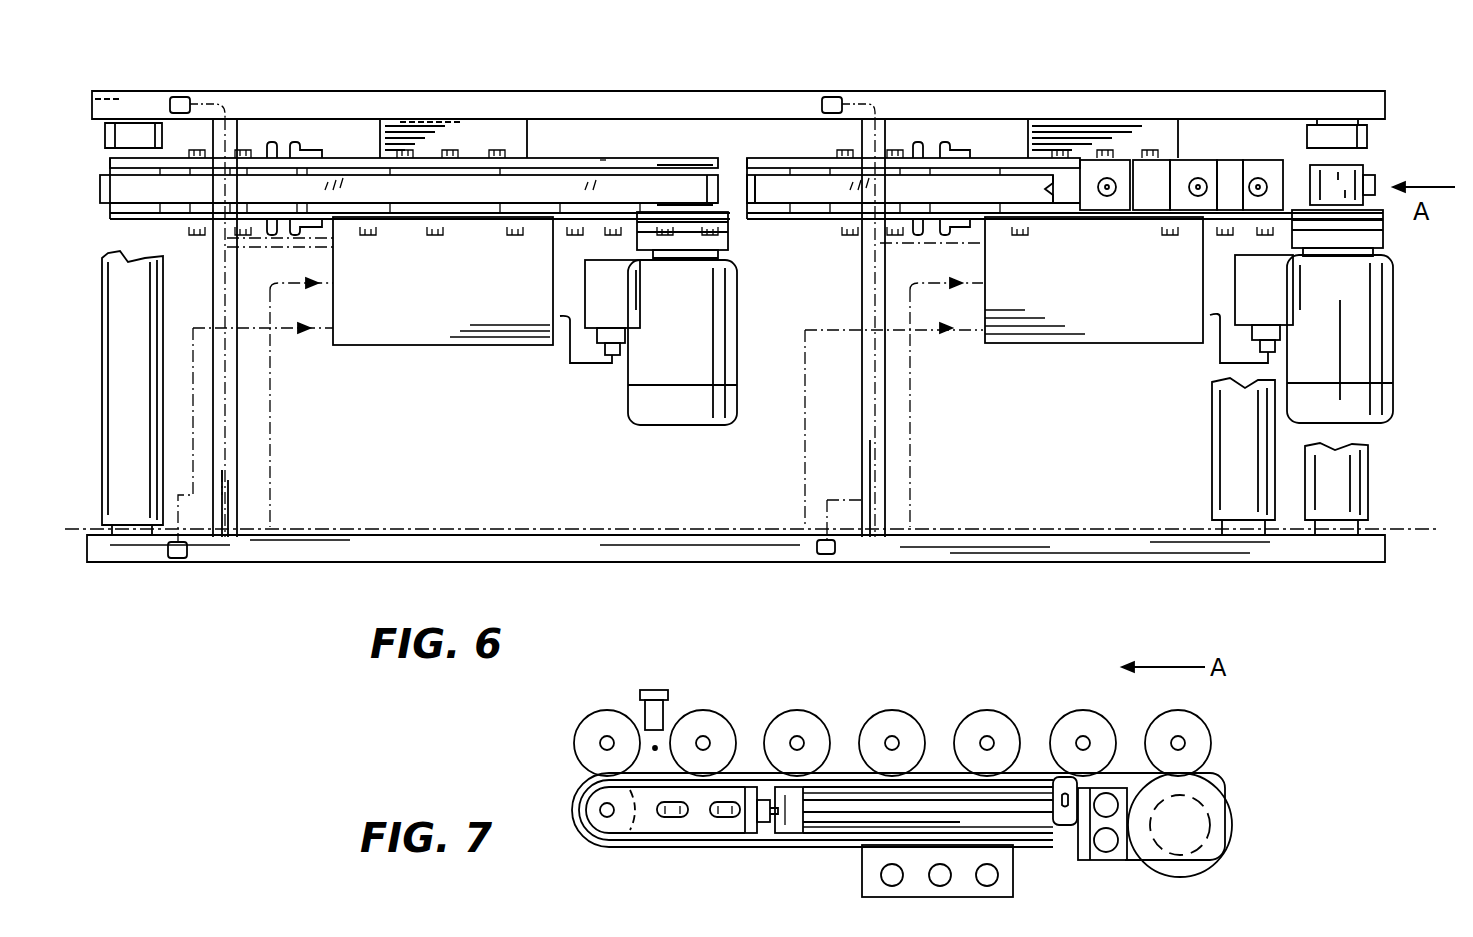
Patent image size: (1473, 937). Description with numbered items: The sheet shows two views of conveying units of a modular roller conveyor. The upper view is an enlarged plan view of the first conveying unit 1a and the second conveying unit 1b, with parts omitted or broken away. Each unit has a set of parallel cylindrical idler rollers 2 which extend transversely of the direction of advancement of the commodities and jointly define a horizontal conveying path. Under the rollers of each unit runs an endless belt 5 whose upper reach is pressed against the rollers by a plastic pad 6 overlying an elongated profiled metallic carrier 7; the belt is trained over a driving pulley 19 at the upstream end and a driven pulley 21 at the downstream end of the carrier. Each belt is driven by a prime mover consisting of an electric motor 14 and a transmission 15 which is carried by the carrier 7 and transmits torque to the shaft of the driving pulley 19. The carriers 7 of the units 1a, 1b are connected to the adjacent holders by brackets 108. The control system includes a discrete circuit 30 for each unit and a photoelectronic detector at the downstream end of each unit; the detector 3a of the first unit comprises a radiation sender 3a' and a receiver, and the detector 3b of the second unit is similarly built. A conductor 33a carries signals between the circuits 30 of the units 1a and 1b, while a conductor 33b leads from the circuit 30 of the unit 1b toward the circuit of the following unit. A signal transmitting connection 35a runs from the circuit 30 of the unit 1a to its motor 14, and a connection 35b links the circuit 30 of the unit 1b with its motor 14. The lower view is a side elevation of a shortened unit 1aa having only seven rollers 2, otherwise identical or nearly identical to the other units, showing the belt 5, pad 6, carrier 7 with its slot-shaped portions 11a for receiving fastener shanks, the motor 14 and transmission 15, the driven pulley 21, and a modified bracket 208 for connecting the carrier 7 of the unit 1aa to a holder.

In FIG. 6, the first conveying unit 1a is at (1300, 120).
In FIG. 6, the second conveying unit 1b is at (643, 140).
In FIG. 7, the shortened conveying unit 1aa is at (932, 715).
In FIG. 6, the idler roller 2 is at (125, 372).
In FIG. 7, the idler roller 2 is at (803, 718).
In FIG. 7, the photoelectronic detector 3a is at (678, 691).
In FIG. 6, the radiation source 3a' is at (828, 585).
In FIG. 6, the photoelectronic detector 3b is at (177, 558).
In FIG. 6, the endless belt 5 is at (357, 190).
In FIG. 7, the endless belt 5 is at (1020, 770).
In FIG. 6, the plastic pad 6 is at (605, 160).
In FIG. 7, the plastic pad 6 is at (745, 785).
In FIG. 6, the carrier 7 is at (548, 160).
In FIG. 7, the carrier 7 is at (818, 820).
In FIG. 7, the slot-shaped portion 11a is at (860, 815).
In FIG. 6, the electric motor 14 is at (685, 368).
In FIG. 7, the electric motor 14 is at (1218, 822).
In FIG. 6, the transmission 15 is at (735, 240).
In FIG. 7, the transmission 15 is at (1225, 860).
In FIG. 6, the driving pulley 19 is at (683, 168).
In FIG. 6, the driven pulley 21 is at (773, 160).
In FIG. 7, the driven pulley 21 is at (603, 835).
In FIG. 6, the circuit 30 is at (452, 300).
In FIG. 6, the conductor 33a is at (272, 448).
In FIG. 6, the conductor 33b is at (235, 415).
In FIG. 6, the signal transmitting connection 35a is at (1218, 340).
In FIG. 6, the signal transmitting connection 35b is at (590, 368).
In FIG. 6, the bracket 108 is at (435, 140).
In FIG. 7, the modified bracket 208 is at (1013, 880).